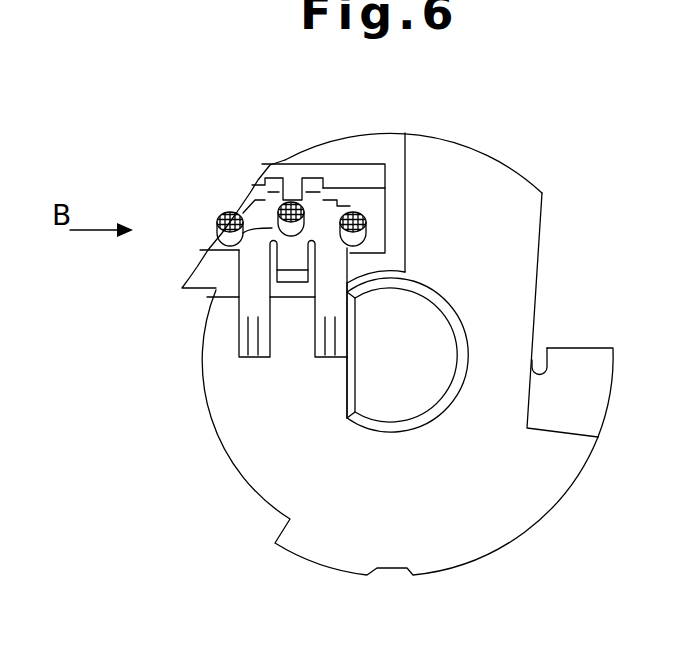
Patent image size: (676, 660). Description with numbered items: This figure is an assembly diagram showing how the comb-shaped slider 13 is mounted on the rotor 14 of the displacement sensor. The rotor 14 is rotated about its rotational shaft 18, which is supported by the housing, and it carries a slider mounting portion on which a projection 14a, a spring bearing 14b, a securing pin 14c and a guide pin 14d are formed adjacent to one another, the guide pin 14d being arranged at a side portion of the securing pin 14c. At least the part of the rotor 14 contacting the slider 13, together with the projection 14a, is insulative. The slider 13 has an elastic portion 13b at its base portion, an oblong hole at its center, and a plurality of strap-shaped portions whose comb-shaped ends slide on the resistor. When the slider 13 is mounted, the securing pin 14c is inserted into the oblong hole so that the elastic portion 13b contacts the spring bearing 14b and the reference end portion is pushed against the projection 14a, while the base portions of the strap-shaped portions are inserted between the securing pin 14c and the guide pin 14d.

The slider 13 is at (239, 342).
The elastic portion 13b is at (312, 178).
The rotor 14 is at (227, 390).
The projection 14a is at (300, 262).
The spring bearing 14b is at (373, 178).
The securing pin 14c is at (272, 228).
The guide pin 14d is at (230, 213).
The rotational shaft 18 is at (392, 407).